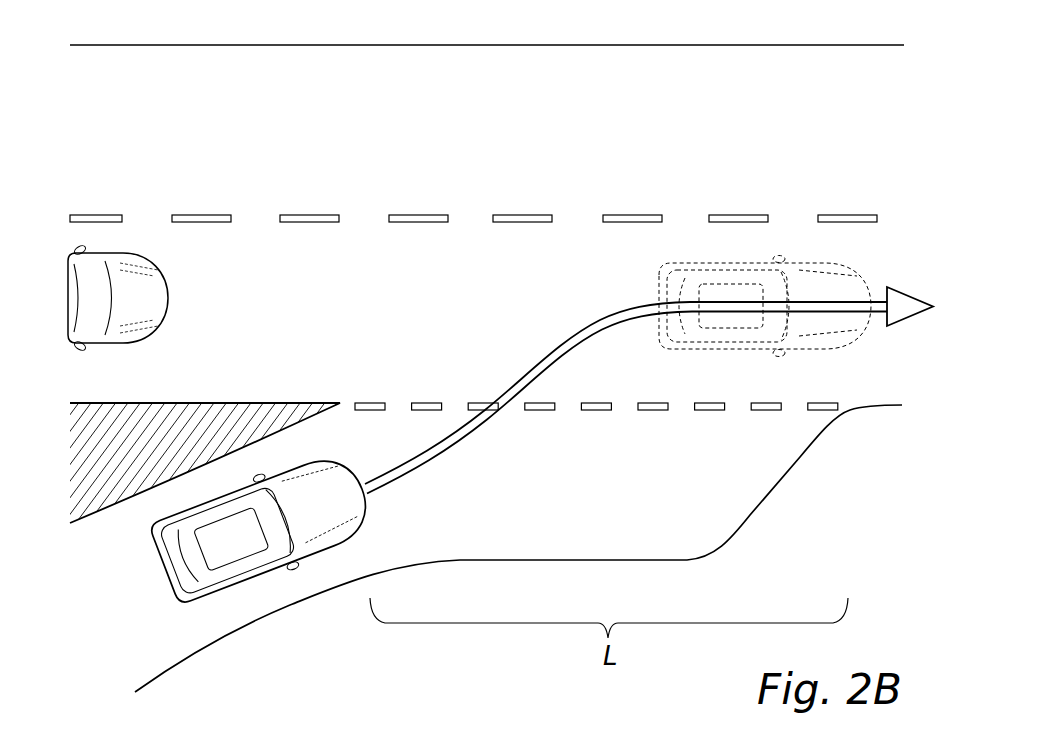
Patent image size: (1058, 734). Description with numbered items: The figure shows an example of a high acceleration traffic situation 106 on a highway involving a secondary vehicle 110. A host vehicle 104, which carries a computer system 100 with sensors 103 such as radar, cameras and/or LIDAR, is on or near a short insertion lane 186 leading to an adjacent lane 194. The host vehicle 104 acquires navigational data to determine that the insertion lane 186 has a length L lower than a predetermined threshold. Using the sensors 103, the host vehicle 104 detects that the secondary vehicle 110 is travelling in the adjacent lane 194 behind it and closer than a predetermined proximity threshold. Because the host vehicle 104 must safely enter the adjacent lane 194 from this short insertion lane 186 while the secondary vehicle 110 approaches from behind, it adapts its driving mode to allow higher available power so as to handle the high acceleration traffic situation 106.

The computer system 100 is at (263, 527).
The sensors 103 is at (321, 501).
The host vehicle 104 is at (231, 539).
The high acceleration traffic situation 106 is at (588, 60).
The secondary vehicle 110 is at (133, 316).
The insertion lane 186 is at (557, 510).
The adjacent lane 194 is at (402, 247).